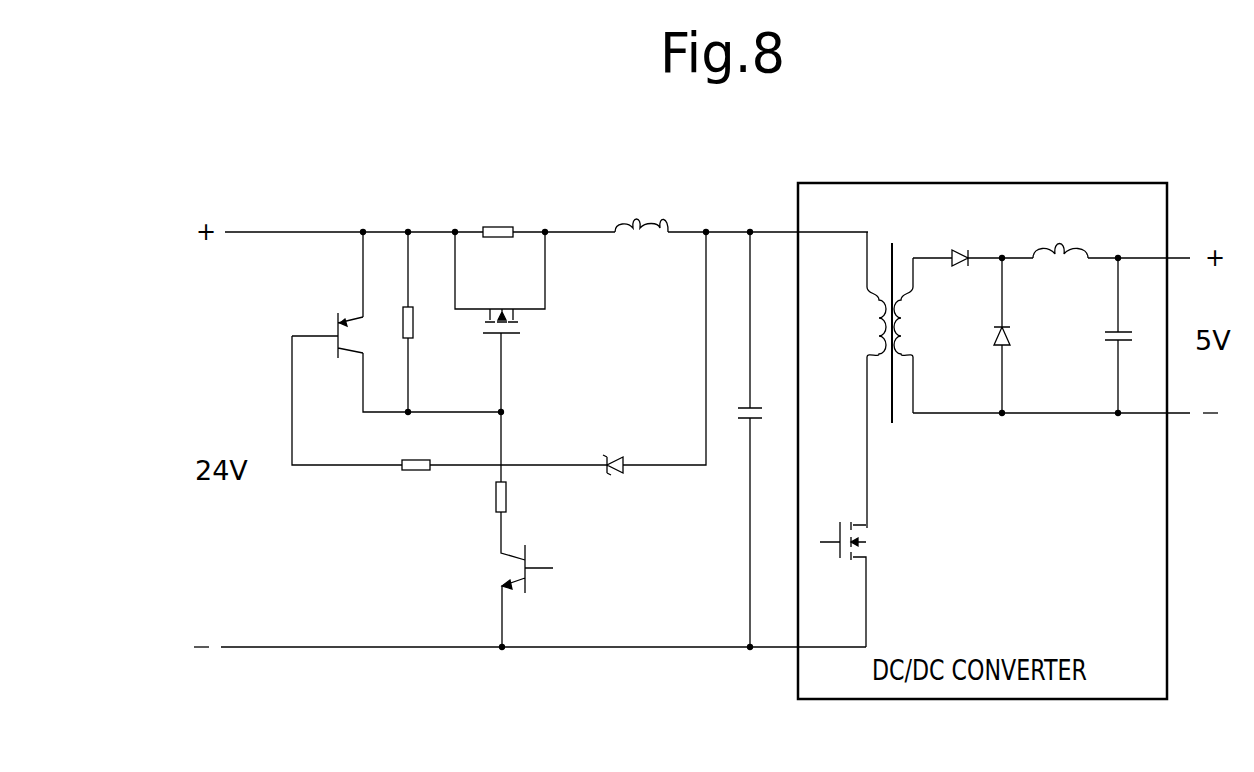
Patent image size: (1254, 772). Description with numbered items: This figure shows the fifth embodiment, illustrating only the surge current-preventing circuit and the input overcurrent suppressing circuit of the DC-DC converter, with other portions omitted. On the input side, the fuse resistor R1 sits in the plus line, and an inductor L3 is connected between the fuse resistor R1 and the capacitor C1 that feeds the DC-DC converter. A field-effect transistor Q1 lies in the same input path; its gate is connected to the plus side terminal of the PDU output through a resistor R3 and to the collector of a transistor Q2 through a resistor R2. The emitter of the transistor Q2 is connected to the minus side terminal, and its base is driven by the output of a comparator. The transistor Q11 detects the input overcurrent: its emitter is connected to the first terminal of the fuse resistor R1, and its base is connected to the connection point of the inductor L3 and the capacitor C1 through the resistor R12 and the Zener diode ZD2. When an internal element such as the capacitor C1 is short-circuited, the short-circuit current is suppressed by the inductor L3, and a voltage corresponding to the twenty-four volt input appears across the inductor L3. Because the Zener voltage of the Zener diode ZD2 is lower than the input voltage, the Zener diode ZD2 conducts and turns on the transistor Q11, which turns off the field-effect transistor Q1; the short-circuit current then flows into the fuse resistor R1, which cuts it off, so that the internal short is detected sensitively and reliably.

The fuse resistor R1 is at (500, 226).
The resistor R3 is at (414, 322).
The resistor R12 is at (410, 472).
The resistor R2 is at (508, 493).
The field-effect transistor Q1 is at (527, 326).
The transistor Q11 is at (327, 327).
The transistor Q2 is at (500, 573).
The inductor L3 is at (640, 224).
The Zener diode ZD2 is at (625, 470).
The capacitor C1 is at (737, 412).